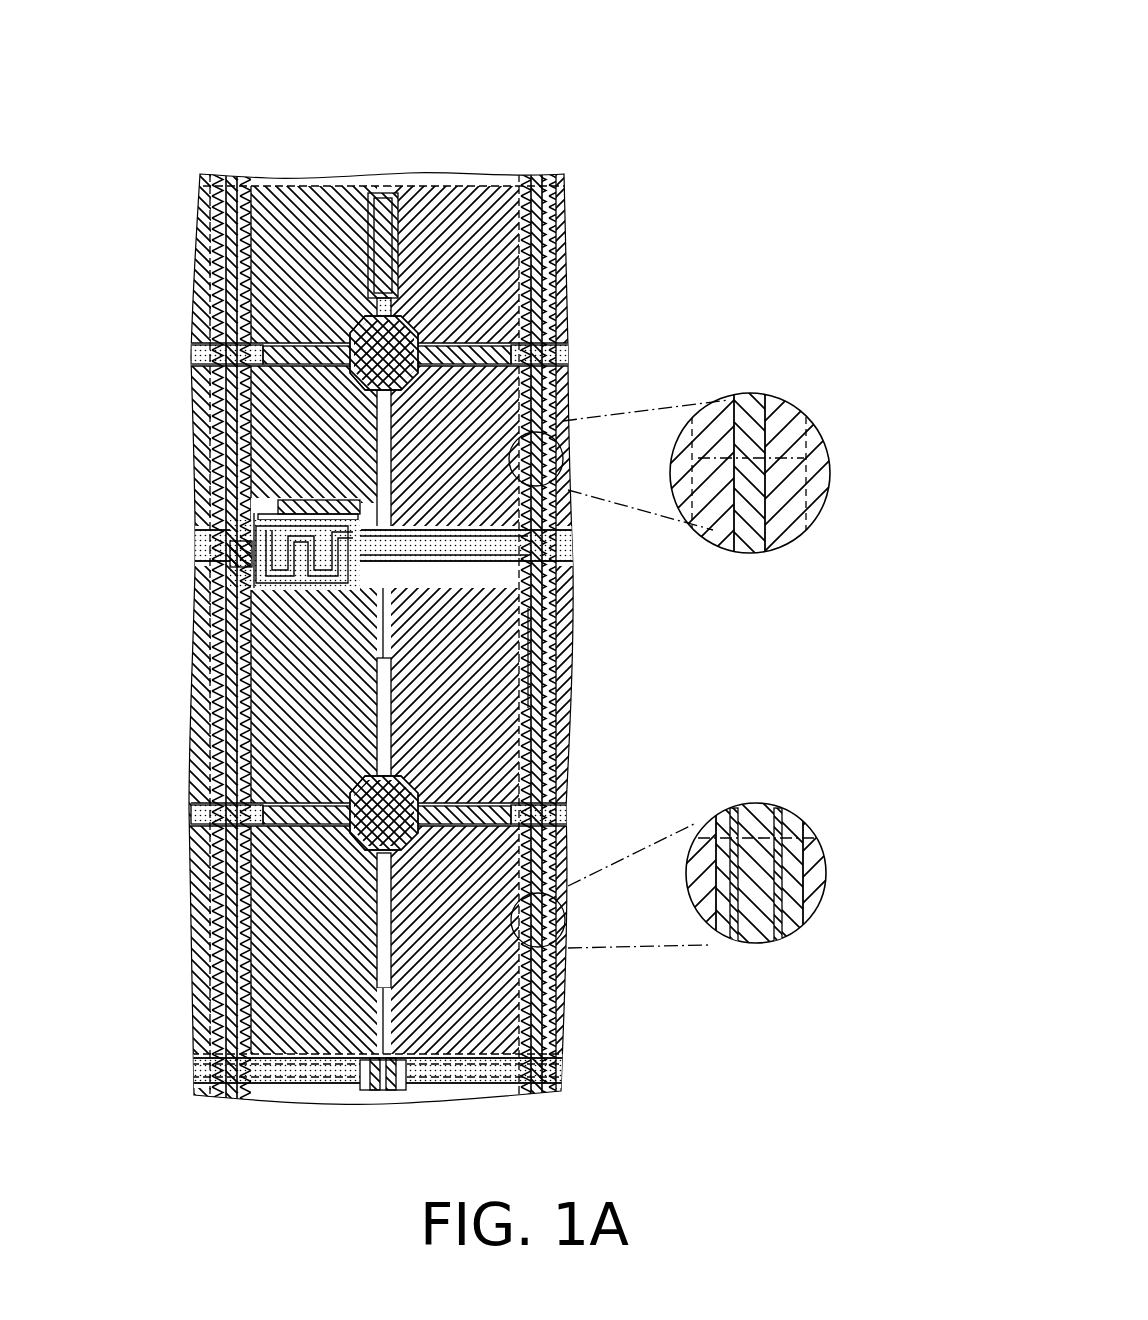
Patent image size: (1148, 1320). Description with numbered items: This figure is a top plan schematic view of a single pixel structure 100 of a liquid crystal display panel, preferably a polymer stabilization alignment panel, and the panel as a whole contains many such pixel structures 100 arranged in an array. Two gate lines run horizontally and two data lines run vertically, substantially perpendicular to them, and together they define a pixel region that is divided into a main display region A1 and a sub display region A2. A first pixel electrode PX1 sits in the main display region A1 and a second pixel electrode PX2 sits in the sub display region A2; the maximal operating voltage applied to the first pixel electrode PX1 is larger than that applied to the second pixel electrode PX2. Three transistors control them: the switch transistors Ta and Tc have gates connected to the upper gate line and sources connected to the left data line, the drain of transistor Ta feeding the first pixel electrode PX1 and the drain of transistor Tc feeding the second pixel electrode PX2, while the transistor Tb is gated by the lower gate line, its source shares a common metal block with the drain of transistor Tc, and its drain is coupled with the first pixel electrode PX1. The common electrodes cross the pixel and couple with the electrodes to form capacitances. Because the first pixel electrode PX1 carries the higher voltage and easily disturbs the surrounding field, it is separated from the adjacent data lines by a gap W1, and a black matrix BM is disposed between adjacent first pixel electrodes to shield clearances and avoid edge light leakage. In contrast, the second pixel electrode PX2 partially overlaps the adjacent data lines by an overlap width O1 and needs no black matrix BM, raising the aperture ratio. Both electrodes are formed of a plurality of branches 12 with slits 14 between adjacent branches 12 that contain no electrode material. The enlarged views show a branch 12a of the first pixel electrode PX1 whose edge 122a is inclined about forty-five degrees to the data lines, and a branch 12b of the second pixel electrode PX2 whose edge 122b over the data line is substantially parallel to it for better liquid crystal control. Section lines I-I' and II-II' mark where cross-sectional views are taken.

The pixel structure 100 is at (600, 86).
The black matrix BM is at (188, 180).
The first pixel electrode PX1 is at (545, 222).
The second pixel electrode PX2 is at (525, 712).
The main display region A1 is at (564, 258).
The sub display region A2 is at (562, 960).
The transistor Tc is at (272, 502).
The transistor Ta is at (236, 546).
The transistor Tb is at (367, 1082).
The slit 14 is at (521, 640).
The branch 12 is at (498, 660).
The branch of first pixel electrode 12a is at (791, 499).
The branch of second pixel electrode 12b is at (800, 897).
The gap W1 is at (724, 520).
The edge 122a is at (766, 530).
The edge 122b is at (772, 905).
The overlap width O1 is at (718, 908).
The section line I is at (723, 441).
The section line I' is at (778, 441).
The section line II is at (725, 822).
The section line II' is at (794, 822).